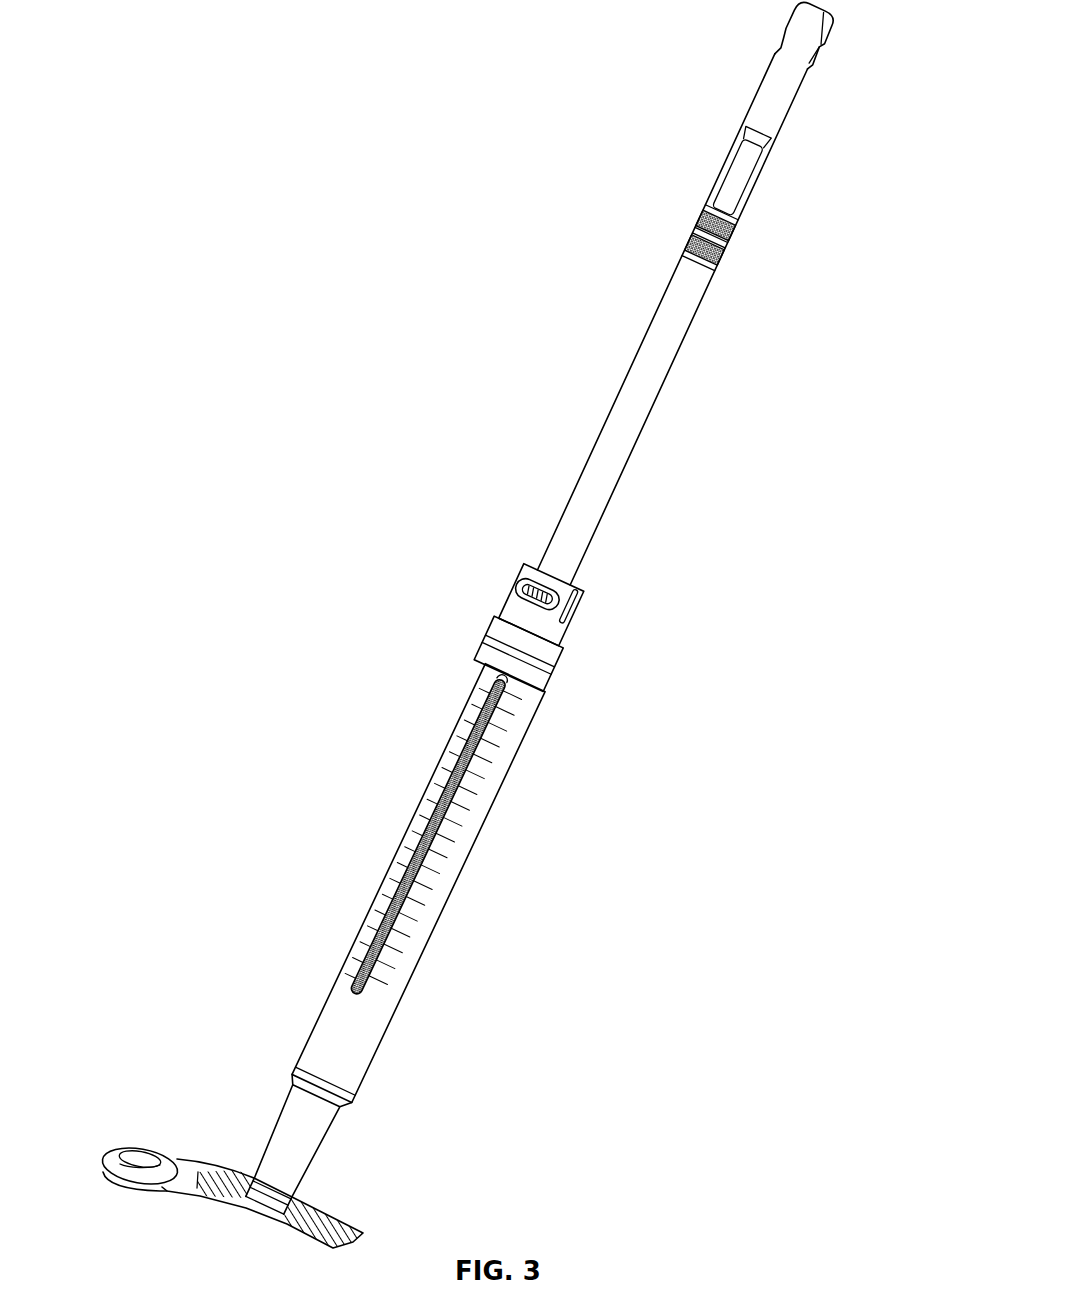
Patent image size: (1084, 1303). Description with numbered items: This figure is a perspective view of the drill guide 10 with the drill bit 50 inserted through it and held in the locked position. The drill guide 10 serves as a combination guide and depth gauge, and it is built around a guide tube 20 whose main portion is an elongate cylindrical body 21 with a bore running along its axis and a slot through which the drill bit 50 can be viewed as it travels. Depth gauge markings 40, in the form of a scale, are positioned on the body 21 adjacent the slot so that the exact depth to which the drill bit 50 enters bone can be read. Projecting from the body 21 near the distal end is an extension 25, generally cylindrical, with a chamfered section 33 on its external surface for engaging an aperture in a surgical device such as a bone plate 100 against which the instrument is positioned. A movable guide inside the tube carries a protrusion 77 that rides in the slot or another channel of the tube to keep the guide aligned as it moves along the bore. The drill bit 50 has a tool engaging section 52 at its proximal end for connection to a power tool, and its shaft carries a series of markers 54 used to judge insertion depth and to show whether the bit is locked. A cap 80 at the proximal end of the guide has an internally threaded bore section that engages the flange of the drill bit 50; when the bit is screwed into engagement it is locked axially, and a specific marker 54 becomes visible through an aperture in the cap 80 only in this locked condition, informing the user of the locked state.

The drill guide 10 is at (561, 610).
The guide tube 20 is at (441, 891).
The elongate cylindrical body 21 is at (418, 883).
The extension 25 is at (294, 1147).
The chamfered section 33 is at (268, 1197).
The depth gauge markings 40 is at (433, 836).
The drill bit 50 is at (711, 293).
The tool engaging section 52 is at (805, 35).
The markers 54 is at (526, 591).
The protrusion 77 is at (503, 678).
The cap 80 is at (569, 606).
The bone plate 100 is at (182, 1162).